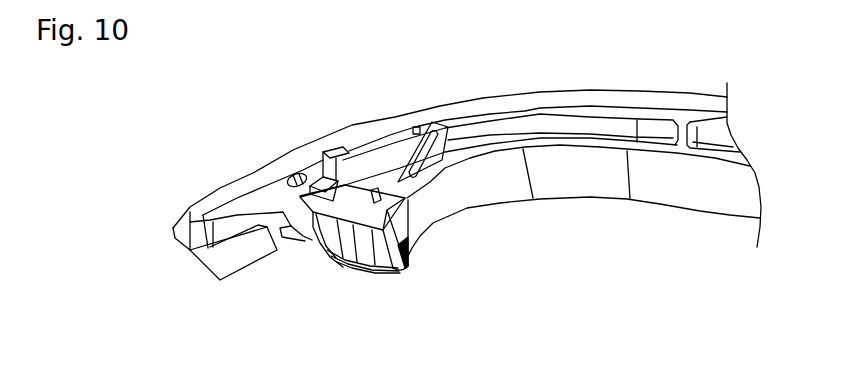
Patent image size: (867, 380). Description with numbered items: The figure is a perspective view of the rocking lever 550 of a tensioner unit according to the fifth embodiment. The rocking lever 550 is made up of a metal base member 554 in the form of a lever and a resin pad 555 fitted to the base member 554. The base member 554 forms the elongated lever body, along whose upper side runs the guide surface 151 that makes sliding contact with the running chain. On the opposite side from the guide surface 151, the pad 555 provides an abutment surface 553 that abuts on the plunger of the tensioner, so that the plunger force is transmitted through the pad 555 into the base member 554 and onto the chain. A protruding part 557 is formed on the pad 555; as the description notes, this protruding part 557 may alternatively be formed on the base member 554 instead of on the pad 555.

The guide surface 151 is at (467, 138).
The rocking lever 550 is at (319, 166).
The abutment surface 553 is at (356, 286).
The base member 554 is at (582, 226).
The pad 555 is at (330, 260).
The protruding part 557 is at (417, 276).